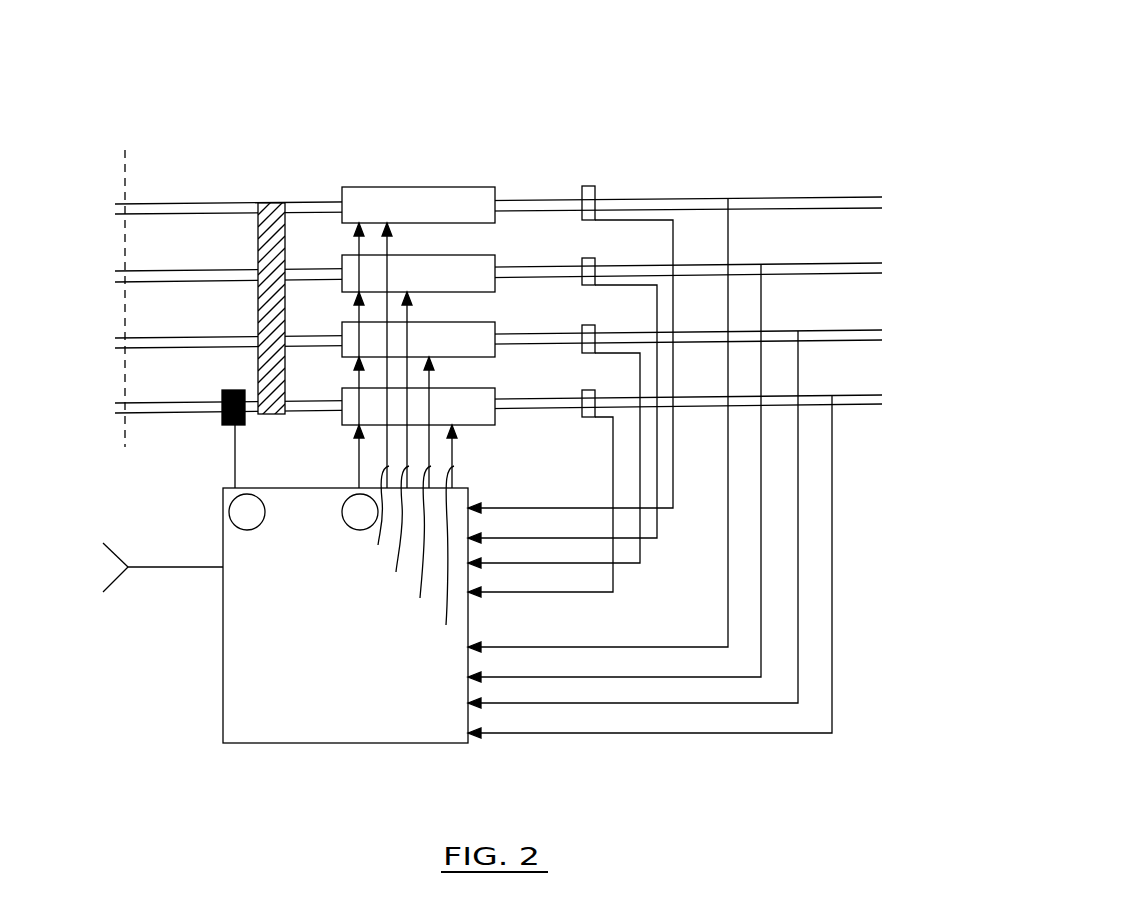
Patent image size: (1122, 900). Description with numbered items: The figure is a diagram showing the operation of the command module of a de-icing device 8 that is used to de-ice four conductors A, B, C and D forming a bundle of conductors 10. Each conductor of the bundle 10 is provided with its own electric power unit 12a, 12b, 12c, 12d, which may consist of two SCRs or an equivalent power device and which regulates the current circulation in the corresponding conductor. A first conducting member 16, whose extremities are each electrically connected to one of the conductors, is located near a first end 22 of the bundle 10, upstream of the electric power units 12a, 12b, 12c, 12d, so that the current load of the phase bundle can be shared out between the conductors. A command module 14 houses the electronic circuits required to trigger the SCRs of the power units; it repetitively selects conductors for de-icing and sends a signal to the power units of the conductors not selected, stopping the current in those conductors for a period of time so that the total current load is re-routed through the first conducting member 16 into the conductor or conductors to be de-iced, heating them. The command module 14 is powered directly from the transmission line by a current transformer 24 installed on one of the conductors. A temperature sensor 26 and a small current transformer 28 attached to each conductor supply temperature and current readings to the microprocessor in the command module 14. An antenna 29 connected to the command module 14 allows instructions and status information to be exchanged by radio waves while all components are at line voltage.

The device 8 is at (455, 122).
The bundle of conductors 10 is at (918, 175).
The electric power unit 12a is at (418, 205).
The electric power unit 12b is at (418, 273).
The electric power unit 12c is at (418, 339).
The electric power unit 12d is at (418, 406).
The command module 14 is at (260, 703).
The first conducting member 16 is at (278, 203).
The first end 22 is at (123, 285).
The current transformer 24 is at (225, 427).
The temperature sensor 26 is at (585, 155).
The small current transformer 28 is at (717, 160).
The antenna 29 is at (118, 590).